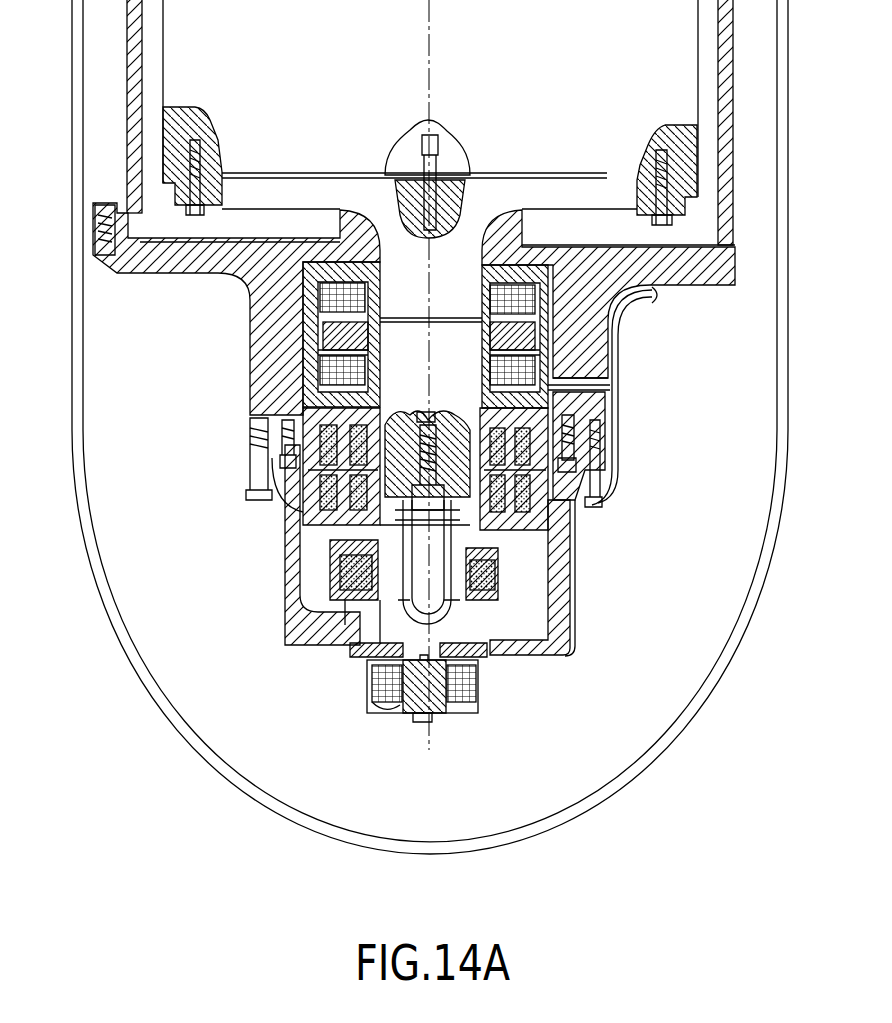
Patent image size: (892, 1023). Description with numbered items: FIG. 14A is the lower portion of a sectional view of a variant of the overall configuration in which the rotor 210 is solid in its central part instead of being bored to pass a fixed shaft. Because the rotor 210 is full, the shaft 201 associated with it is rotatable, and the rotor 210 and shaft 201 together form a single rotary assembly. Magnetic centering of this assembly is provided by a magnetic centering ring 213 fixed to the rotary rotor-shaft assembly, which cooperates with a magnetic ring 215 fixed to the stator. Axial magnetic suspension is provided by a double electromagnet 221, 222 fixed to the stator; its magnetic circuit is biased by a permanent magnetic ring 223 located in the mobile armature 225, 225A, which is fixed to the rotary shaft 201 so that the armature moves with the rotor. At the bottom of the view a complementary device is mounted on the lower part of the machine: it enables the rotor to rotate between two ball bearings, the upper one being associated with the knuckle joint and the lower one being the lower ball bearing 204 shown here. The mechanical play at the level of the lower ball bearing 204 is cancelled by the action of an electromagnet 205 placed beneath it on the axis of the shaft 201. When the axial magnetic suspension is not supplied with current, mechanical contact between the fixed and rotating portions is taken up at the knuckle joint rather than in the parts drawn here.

The shaft 201 is at (462, 380).
The lower ball bearing 204 is at (380, 531).
The electromagnet 205 is at (475, 702).
The rotor 210 is at (355, 53).
The magnetic centering ring 213 is at (532, 497).
The magnetic ring 215 is at (548, 418).
The double electromagnet 221 is at (305, 297).
The double electromagnet 222 is at (305, 375).
The permanent magnetic ring 223 is at (305, 323).
The mobile armature 225 is at (378, 318).
The mobile armature 225A is at (305, 350).